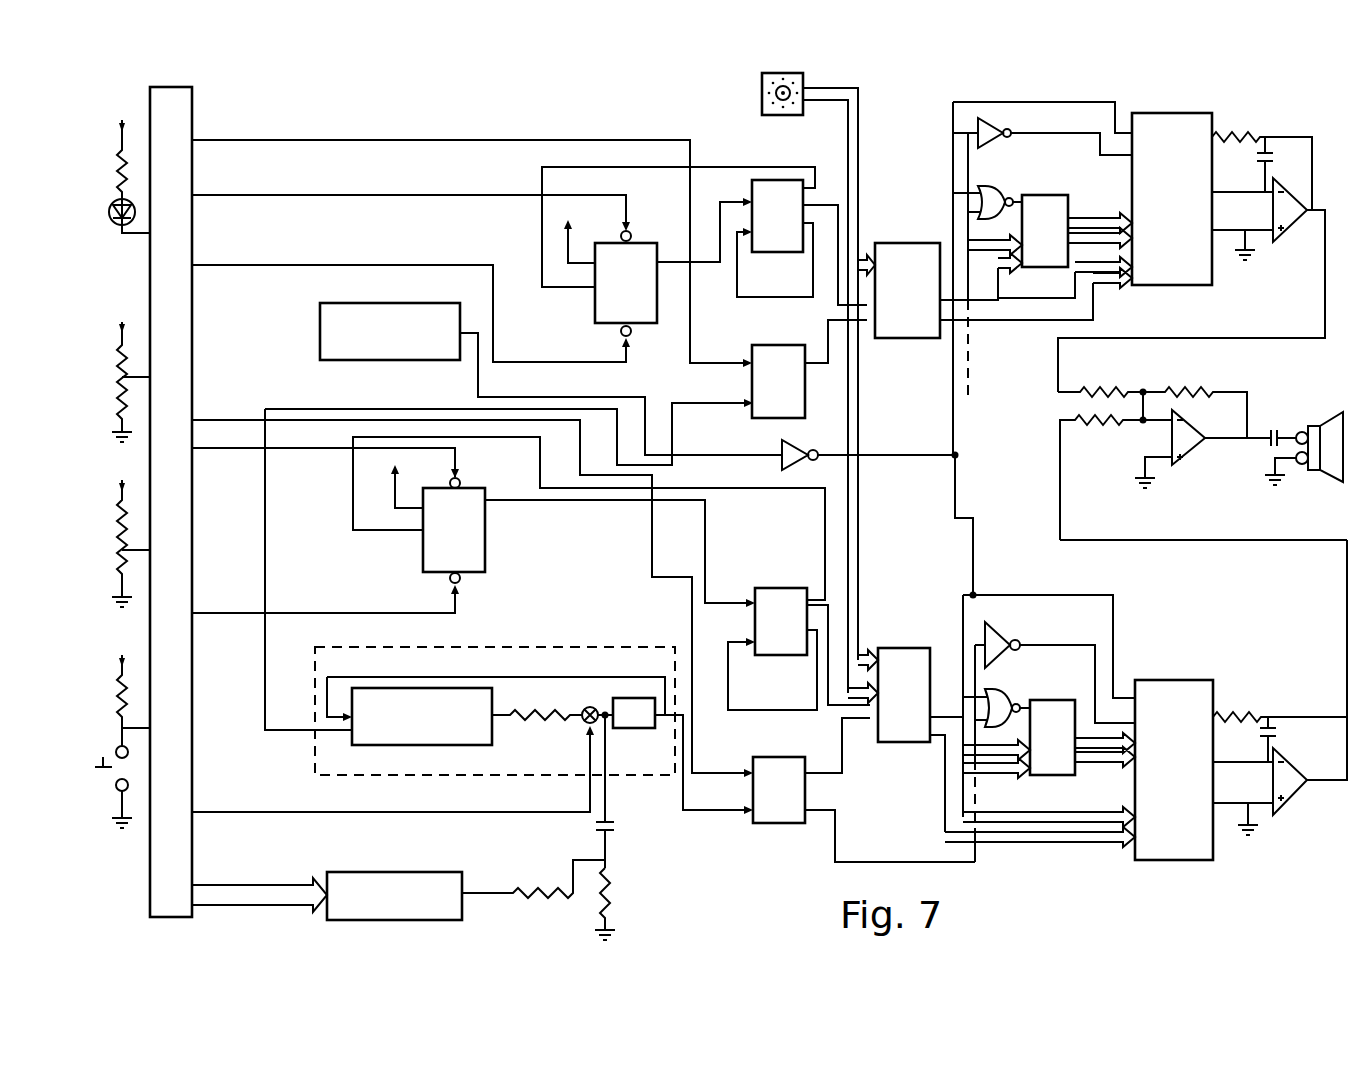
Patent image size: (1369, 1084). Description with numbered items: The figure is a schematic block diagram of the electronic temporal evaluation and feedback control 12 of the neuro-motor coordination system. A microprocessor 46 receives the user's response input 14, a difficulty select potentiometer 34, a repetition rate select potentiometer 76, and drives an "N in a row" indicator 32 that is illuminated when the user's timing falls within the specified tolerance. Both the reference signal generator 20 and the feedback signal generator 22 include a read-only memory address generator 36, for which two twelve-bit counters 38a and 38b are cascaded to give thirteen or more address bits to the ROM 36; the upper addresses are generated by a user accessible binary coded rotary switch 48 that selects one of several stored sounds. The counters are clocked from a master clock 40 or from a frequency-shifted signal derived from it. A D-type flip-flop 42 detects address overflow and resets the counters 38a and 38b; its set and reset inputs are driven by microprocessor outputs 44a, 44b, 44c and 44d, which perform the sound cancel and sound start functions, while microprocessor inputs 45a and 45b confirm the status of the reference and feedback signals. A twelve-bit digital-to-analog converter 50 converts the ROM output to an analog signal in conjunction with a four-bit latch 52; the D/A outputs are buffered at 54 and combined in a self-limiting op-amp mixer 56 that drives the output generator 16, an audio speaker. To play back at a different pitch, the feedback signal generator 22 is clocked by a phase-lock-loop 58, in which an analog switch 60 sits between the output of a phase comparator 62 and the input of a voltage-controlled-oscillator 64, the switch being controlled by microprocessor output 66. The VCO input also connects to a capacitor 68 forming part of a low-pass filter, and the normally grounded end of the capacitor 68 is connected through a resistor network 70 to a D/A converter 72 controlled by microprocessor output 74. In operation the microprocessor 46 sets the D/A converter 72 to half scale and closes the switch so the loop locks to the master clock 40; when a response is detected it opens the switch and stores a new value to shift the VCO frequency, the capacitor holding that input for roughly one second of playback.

The temporal evaluation and feedback control 12 is at (752, 478).
The response input 14 is at (119, 750).
The output generator 16 is at (1334, 482).
The reference signal generator 20 is at (1024, 351).
The feedback signal generator 22 is at (1066, 894).
The "N in a row" indicator 32 is at (135, 200).
The difficulty select potentiometer 34 is at (120, 378).
The read-only memory (ROM) address generator 36 is at (910, 340).
The 12-bit counter 38a is at (795, 256).
The 12-bit counter 38b is at (802, 420).
The master clock 40 is at (318, 348).
The D-type flip-flop 42 is at (620, 240).
The microprocessor output 44a is at (390, 197).
The microprocessor output 44b is at (420, 266).
The microprocessor output 44c is at (330, 451).
The microprocessor output 44d is at (318, 614).
The microprocessor input 45a is at (447, 139).
The microprocessor input 45b is at (216, 419).
The microprocessor 46 is at (193, 565).
The binary coded rotary switch 48 is at (777, 116).
The digital-to-analog converter (D/A) 50 is at (1214, 282).
The four-bit latch 52 is at (1048, 198).
The buffer 54 is at (1283, 242).
The op-amp mixer 56 is at (1192, 452).
The phase-lock-loop 58 is at (636, 777).
The analog switch 60 is at (585, 723).
The phase comparator 62 is at (346, 708).
The voltage-controlled-oscillator (VCO) 64 is at (646, 730).
The microprocessor output 66 is at (250, 811).
The capacitor 68 is at (612, 833).
The resistor network 70 is at (600, 900).
The digital-to-analog (D/A) converter 72 is at (386, 872).
The microprocessor output 74 is at (243, 885).
The repetition rate select potentiometer 76 is at (118, 548).